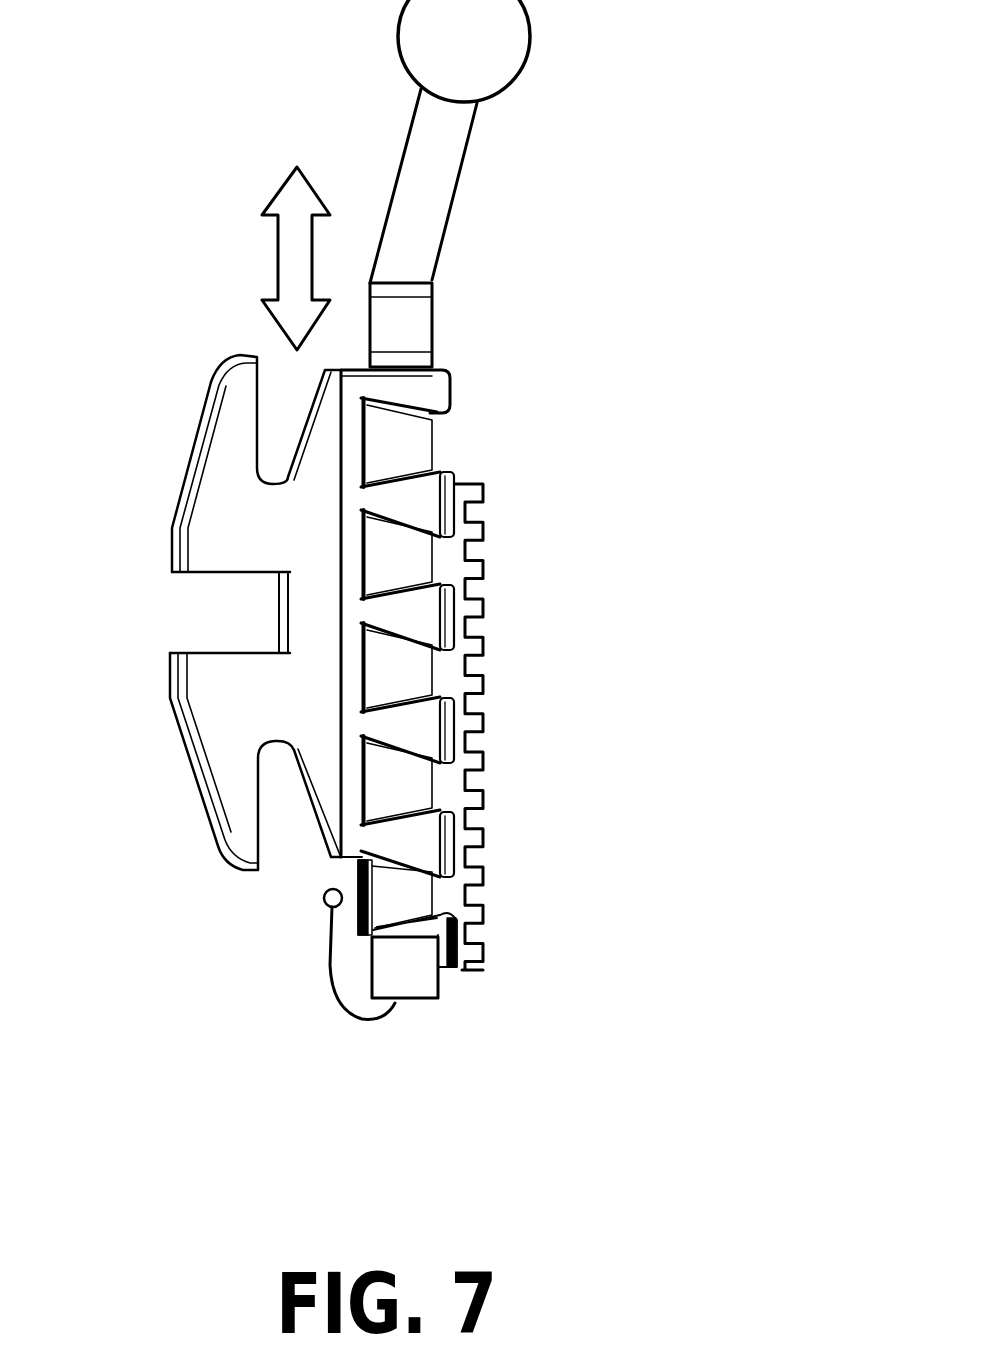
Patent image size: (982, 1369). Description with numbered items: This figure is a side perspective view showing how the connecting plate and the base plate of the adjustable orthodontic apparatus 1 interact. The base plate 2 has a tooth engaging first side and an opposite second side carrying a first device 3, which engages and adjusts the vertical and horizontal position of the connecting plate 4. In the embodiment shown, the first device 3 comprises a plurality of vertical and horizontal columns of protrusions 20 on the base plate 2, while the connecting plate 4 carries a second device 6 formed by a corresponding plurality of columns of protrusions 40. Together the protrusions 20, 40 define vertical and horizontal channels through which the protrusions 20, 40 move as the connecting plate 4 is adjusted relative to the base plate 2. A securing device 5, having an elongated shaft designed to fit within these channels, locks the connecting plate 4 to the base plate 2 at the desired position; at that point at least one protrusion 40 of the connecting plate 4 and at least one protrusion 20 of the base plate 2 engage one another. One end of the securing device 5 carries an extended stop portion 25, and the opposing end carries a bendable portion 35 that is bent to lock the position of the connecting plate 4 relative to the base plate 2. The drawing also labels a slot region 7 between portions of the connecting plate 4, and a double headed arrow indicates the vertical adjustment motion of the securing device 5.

The adjustable orthodontic apparatus 1 is at (823, 282).
The base plate 2 is at (457, 967).
The first device 3 is at (360, 873).
The connecting plate 4 is at (218, 756).
The securing device 5 is at (435, 208).
The second device 6 is at (433, 392).
The slot 7 is at (200, 675).
The protrusions 20 is at (412, 782).
The extended stop portion 25 is at (423, 327).
The bendable portion 35 is at (327, 980).
The protrusions 40 is at (428, 503).